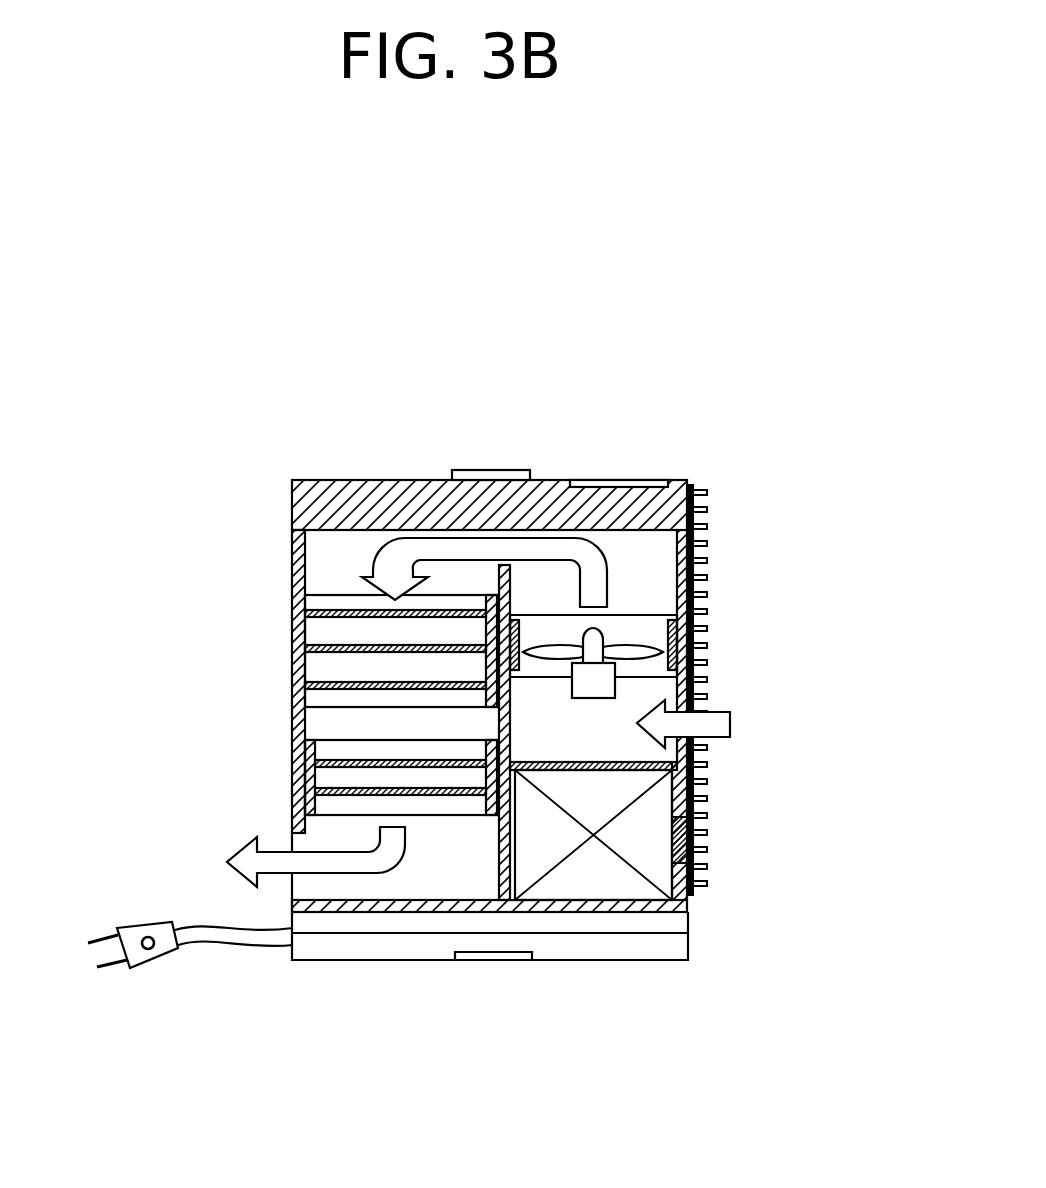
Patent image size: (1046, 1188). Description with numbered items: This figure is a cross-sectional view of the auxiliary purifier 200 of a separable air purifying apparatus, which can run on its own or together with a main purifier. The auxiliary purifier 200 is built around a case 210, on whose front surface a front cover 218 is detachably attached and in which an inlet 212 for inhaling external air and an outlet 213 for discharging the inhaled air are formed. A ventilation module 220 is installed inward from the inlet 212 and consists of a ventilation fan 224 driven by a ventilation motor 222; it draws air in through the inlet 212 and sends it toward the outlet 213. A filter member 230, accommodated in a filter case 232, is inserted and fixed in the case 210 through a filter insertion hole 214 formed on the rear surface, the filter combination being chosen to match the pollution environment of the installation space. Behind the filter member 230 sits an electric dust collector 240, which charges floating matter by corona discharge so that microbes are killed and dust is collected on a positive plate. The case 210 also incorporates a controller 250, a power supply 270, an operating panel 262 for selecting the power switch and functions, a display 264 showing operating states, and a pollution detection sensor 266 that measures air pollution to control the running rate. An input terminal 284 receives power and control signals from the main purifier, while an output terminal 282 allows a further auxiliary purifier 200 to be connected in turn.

The auxiliary purifier 200 is at (714, 966).
The case 210 is at (292, 480).
The inlet 212 is at (707, 748).
The outlet 213 is at (322, 845).
The filter insertion hole 214 is at (293, 697).
The front cover 218 is at (707, 893).
The ventilation module 220 is at (693, 656).
The ventilation motor 222 is at (600, 683).
The ventilation fan 224 is at (648, 648).
The filter member 230 is at (333, 615).
The filter case 232 is at (293, 660).
The electric dust collector 240 is at (293, 750).
The controller 250 is at (707, 795).
The operating panel 262 is at (640, 487).
The display 264 is at (619, 483).
The pollution detection sensor 266 is at (707, 843).
The power supply 270 is at (137, 922).
The output terminal 282 is at (493, 962).
The input terminal 284 is at (478, 470).